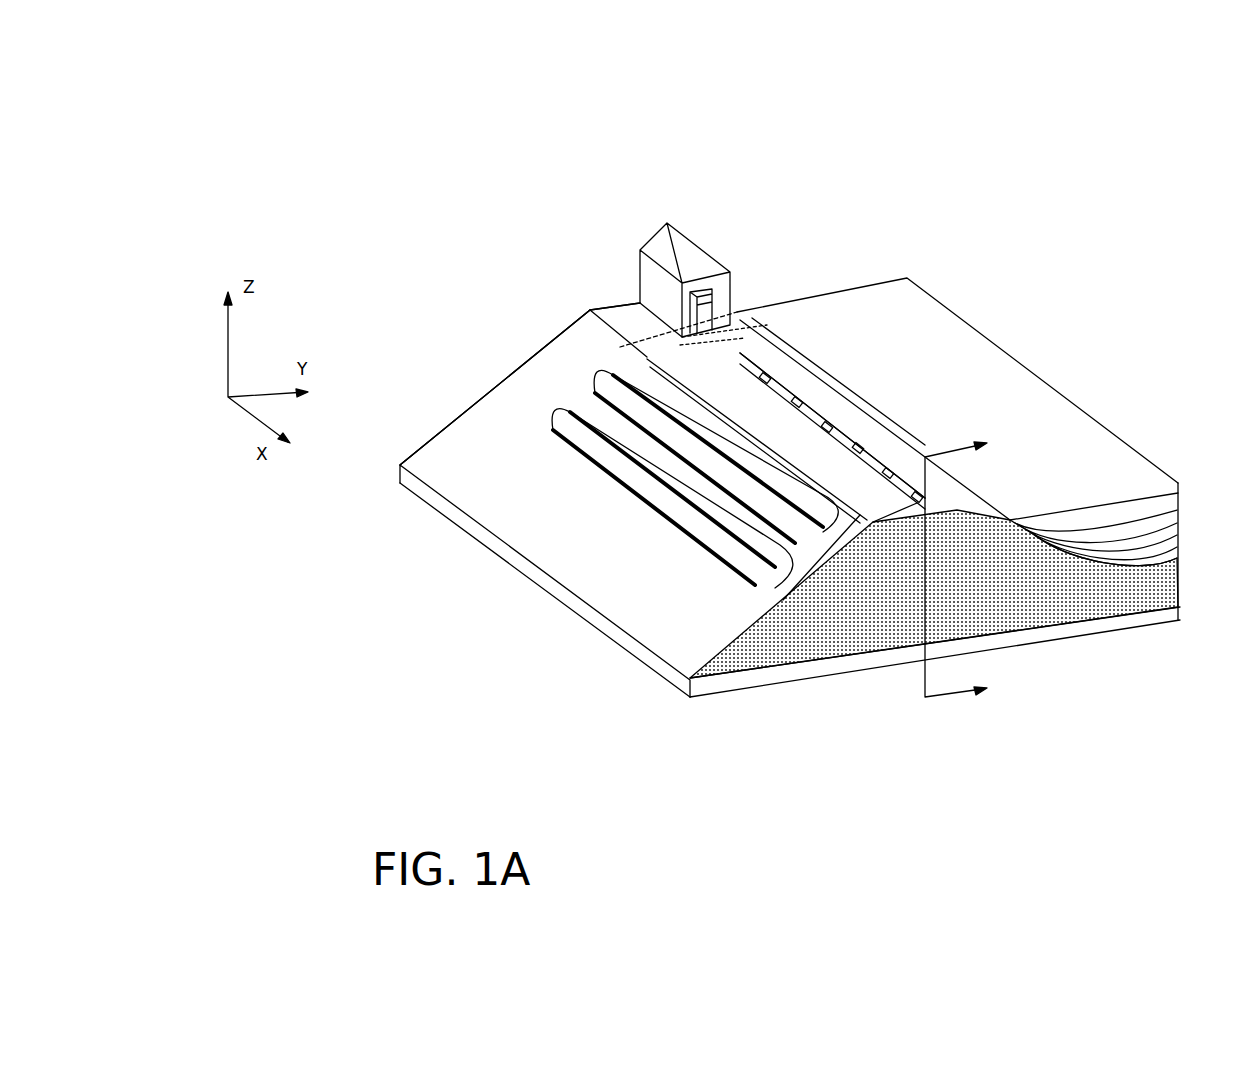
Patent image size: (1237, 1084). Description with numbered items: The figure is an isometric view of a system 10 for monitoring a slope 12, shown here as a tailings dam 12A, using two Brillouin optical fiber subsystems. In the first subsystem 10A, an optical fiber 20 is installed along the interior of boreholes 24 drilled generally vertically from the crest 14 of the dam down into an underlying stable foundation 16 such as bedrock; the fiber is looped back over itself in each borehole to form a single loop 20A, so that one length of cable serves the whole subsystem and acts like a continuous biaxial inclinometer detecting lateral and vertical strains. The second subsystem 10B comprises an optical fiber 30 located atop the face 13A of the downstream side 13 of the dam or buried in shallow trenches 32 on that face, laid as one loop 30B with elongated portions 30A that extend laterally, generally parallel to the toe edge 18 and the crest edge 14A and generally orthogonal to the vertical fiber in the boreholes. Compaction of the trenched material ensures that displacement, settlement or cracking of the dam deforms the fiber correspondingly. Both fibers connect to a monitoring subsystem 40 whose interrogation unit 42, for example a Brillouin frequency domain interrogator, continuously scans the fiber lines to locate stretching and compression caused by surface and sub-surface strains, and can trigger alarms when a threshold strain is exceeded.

The system 10 is at (770, 192).
The first subsystem 10A is at (887, 388).
The second subsystem 10B is at (549, 497).
The slope 12 is at (613, 313).
The tailings dam 12A is at (1094, 529).
The downstream side 13 is at (507, 413).
The face 13A is at (520, 384).
The crest 14 is at (938, 503).
The crest edge 14A is at (823, 497).
The stable foundation 16 is at (742, 680).
The toe edge 18 is at (570, 591).
The optical fiber 20 is at (748, 357).
The loop 20A is at (832, 425).
The boreholes 24 is at (800, 402).
The optical fiber 30 is at (588, 452).
The elongated portions 30A is at (688, 480).
The loop 30B is at (610, 312).
The trenches 32 is at (593, 425).
The monitoring subsystem 40 is at (667, 353).
The interrogation unit 42 is at (714, 310).